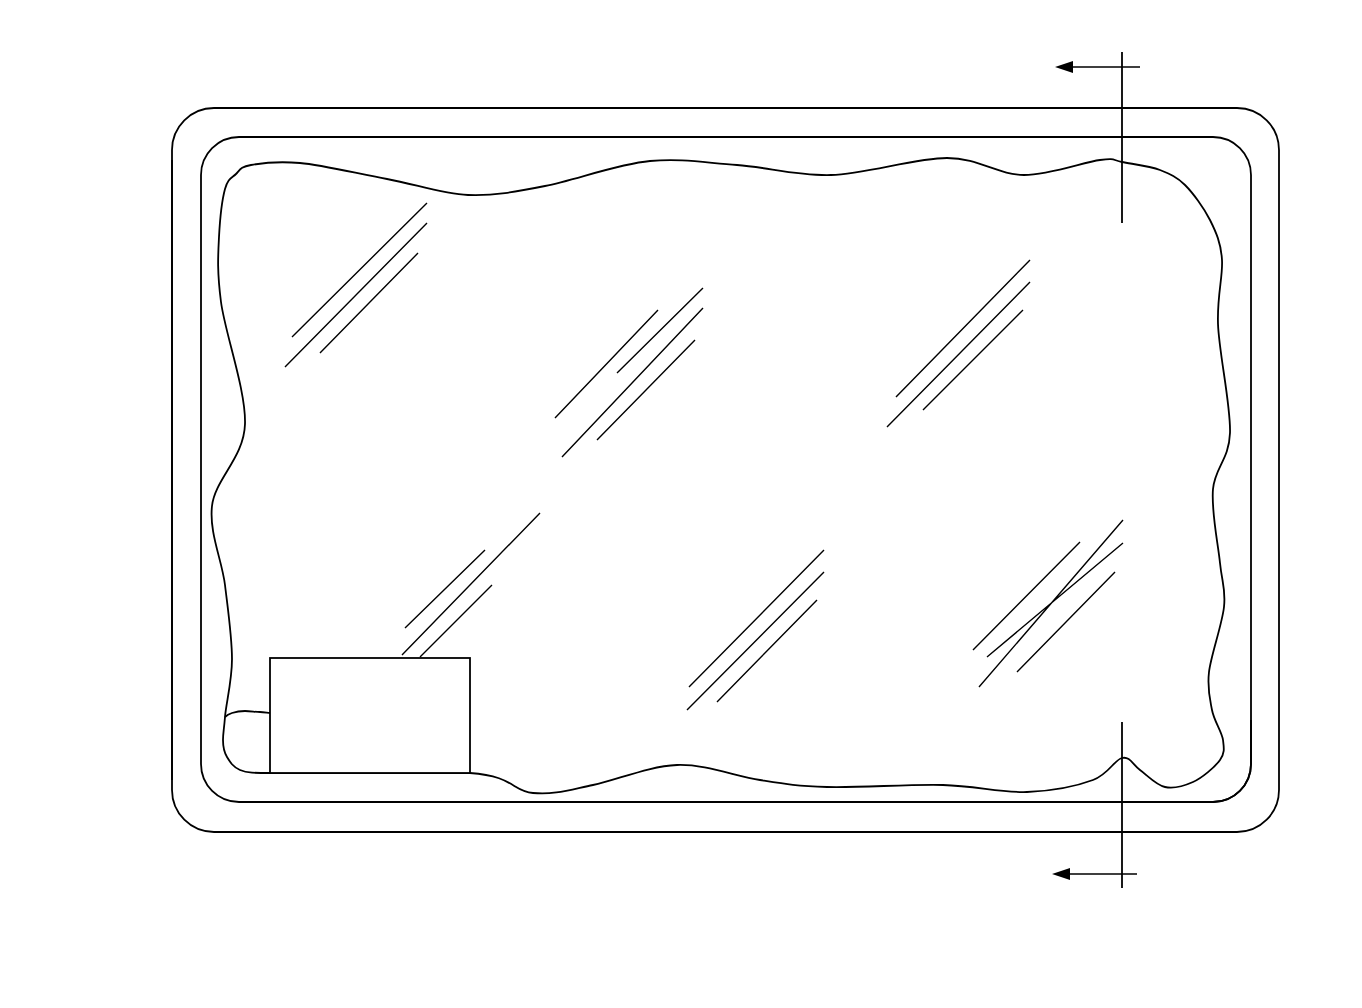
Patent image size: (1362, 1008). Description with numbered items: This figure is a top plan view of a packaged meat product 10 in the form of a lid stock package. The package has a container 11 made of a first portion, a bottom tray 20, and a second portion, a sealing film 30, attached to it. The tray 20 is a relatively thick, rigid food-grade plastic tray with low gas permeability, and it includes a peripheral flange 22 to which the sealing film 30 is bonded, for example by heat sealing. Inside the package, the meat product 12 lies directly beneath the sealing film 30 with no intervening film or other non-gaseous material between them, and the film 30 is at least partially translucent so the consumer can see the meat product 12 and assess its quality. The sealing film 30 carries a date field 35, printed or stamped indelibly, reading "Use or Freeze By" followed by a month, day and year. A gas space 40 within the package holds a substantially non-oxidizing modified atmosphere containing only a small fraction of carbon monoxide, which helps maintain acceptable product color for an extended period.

The packaged meat product 10 is at (165, 100).
The container 11 is at (340, 95).
The bottom tray 20 is at (410, 120).
The peripheral flange 22 is at (172, 235).
The meat product 12 is at (1158, 170).
The sealing film 30 is at (1157, 323).
The date field 35 is at (268, 713).
The gas space 40 is at (1243, 745).